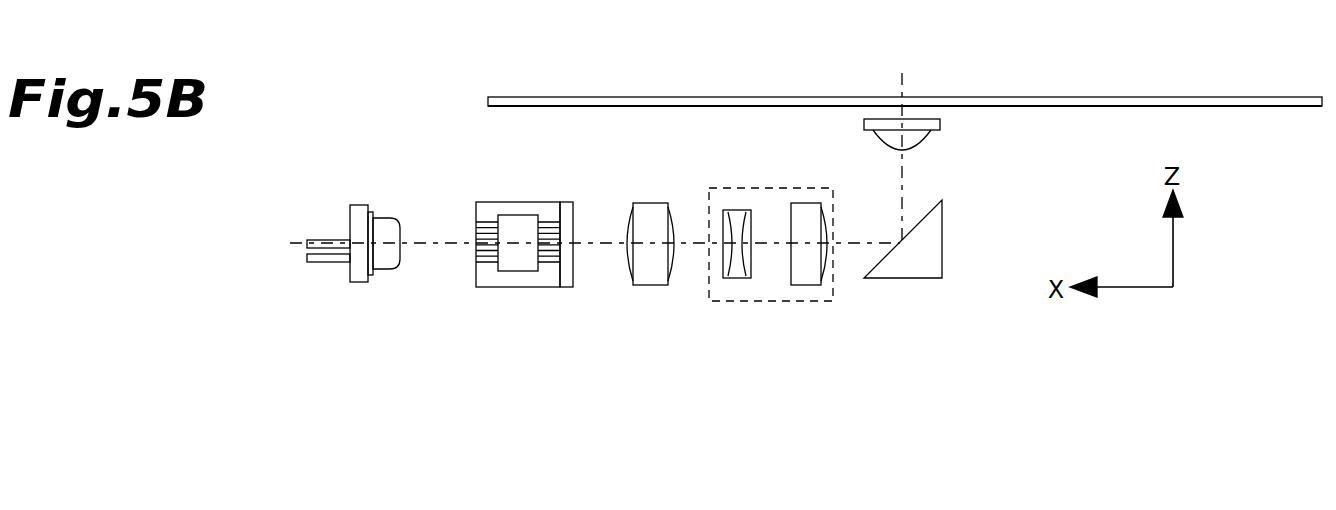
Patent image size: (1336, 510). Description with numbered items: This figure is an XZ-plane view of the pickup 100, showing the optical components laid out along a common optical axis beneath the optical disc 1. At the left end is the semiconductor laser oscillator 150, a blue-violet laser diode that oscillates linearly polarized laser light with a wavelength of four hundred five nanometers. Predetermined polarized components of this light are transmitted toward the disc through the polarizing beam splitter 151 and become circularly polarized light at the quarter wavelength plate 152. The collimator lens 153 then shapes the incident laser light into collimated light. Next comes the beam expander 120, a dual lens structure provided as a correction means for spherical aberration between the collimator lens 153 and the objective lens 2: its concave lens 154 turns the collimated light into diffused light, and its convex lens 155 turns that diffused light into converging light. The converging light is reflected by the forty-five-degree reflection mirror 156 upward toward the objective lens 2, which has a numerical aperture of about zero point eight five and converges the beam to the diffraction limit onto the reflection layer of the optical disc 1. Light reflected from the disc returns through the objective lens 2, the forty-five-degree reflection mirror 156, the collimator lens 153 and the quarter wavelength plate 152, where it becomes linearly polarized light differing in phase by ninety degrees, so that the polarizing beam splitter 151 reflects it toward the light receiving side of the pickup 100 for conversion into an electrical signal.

The optical disc 1 is at (1157, 97).
The objective lens 2 is at (940, 123).
The pickup 100 is at (417, 136).
The beam expander 120 is at (770, 181).
The semiconductor laser oscillator 150 is at (380, 269).
The polarizing beam splitter 151 is at (510, 288).
The quarter wavelength plate 152 is at (563, 288).
The collimator lens 153 is at (648, 287).
The concave lens 154 is at (733, 278).
The convex lens 155 is at (800, 287).
The 45-degree reflection mirror 156 is at (903, 278).